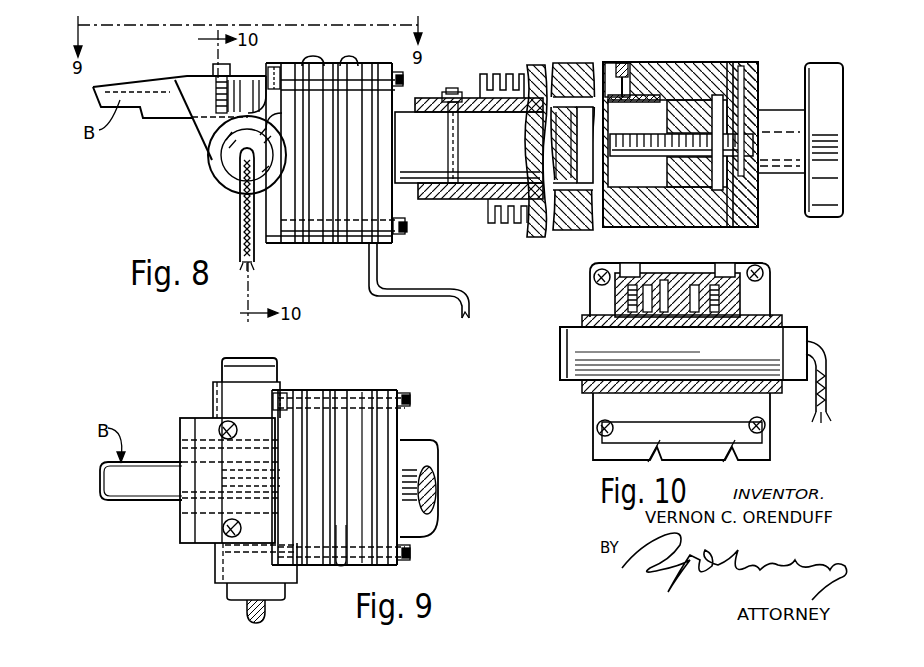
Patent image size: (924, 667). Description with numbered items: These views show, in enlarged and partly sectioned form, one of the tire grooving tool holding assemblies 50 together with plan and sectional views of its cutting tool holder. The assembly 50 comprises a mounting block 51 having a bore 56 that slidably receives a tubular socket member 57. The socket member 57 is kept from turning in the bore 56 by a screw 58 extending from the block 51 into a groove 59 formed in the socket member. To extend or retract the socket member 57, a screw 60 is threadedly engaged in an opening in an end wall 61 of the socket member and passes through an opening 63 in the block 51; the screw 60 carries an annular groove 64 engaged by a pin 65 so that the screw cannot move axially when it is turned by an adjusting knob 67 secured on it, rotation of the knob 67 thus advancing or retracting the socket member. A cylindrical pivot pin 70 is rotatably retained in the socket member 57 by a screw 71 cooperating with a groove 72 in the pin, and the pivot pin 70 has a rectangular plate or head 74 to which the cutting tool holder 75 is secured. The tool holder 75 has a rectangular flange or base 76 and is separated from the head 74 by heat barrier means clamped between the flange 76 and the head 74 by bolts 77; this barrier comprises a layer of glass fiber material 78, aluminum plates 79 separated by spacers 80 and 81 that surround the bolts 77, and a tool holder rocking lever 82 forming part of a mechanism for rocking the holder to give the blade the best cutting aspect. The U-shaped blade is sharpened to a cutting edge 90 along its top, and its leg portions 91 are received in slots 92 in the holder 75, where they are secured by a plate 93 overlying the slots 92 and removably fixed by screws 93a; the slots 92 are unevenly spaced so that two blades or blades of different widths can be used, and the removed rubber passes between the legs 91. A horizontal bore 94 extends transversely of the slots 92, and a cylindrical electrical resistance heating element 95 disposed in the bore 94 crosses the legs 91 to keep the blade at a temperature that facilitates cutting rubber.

In FIG. 8, the tire grooving tool holding assembly 50 is at (648, 54).
In FIG. 8, the mounting block 51 is at (702, 66).
In FIG. 8, the bore 56 is at (716, 96).
In FIG. 8, the tubular socket member 57 is at (481, 80).
In FIG. 8, the screw 58 is at (623, 62).
In FIG. 8, the groove 59 is at (675, 67).
In FIG. 8, the screw 60 is at (651, 158).
In FIG. 8, the end wall 61 is at (664, 121).
In FIG. 8, the opening 63 is at (757, 194).
In FIG. 8, the annular groove 64 is at (742, 148).
In FIG. 8, the pin 65 is at (748, 67).
In FIG. 8, the adjusting knob 67 is at (818, 76).
In FIG. 8, the cylindrical pivot pin 70 is at (403, 113).
In FIG. 9, the cylindrical pivot pin 70 is at (416, 519).
In FIG. 8, the screw 71 is at (455, 90).
In FIG. 8, the groove 72 is at (459, 150).
In FIG. 8, the rectangular plate or head 74 is at (396, 206).
In FIG. 9, the rectangular plate or head 74 is at (397, 428).
In FIG. 8, the cutting tool holder 75 is at (203, 127).
In FIG. 9, the cutting tool holder 75 is at (238, 551).
In FIG. 10, the cutting tool holder 75 is at (757, 263).
In FIG. 8, the rectangular flange or base 76 is at (268, 64).
In FIG. 9, the rectangular flange or base 76 is at (293, 390).
In FIG. 10, the rectangular flange or base 76 is at (762, 403).
In FIG. 8, the bolts 77 is at (398, 72).
In FIG. 9, the bolts 77 is at (408, 395).
In FIG. 10, the bolts 77 is at (593, 277).
In FIG. 8, the layer of glass fiber material 78 is at (304, 243).
In FIG. 9, the layer of glass fiber material 78 is at (297, 529).
In FIG. 8, the aluminum plates 79 is at (346, 62).
In FIG. 9, the aluminum plates 79 is at (350, 566).
In FIG. 9, the spacers 80 is at (314, 393).
In FIG. 9, the spacers 81 is at (338, 393).
In FIG. 8, the tool holder rocking lever 82 is at (368, 256).
In FIG. 9, the tool holder rocking lever 82 is at (372, 447).
In FIG. 10, the tool holder rocking lever 82 is at (769, 443).
In FIG. 9, the cutting edge 90 is at (104, 496).
In FIG. 9, the leg portions 91 is at (228, 492).
In FIG. 10, the leg portions 91 is at (667, 285).
In FIG. 9, the slots 92 is at (188, 457).
In FIG. 10, the slots 92 is at (646, 285).
In FIG. 8, the plate 93 is at (199, 76).
In FIG. 9, the plate 93 is at (198, 425).
In FIG. 10, the plate 93 is at (610, 264).
In FIG. 8, the screws 93a is at (221, 66).
In FIG. 9, the screws 93a is at (238, 424).
In FIG. 10, the screws 93a is at (631, 263).
In FIG. 8, the horizontal bore 94 is at (228, 166).
In FIG. 9, the horizontal bore 94 is at (217, 392).
In FIG. 10, the horizontal bore 94 is at (770, 322).
In FIG. 8, the electrical resistance type heating element 95 is at (238, 186).
In FIG. 9, the electrical resistance type heating element 95 is at (238, 589).
In FIG. 10, the electrical resistance type heating element 95 is at (802, 333).